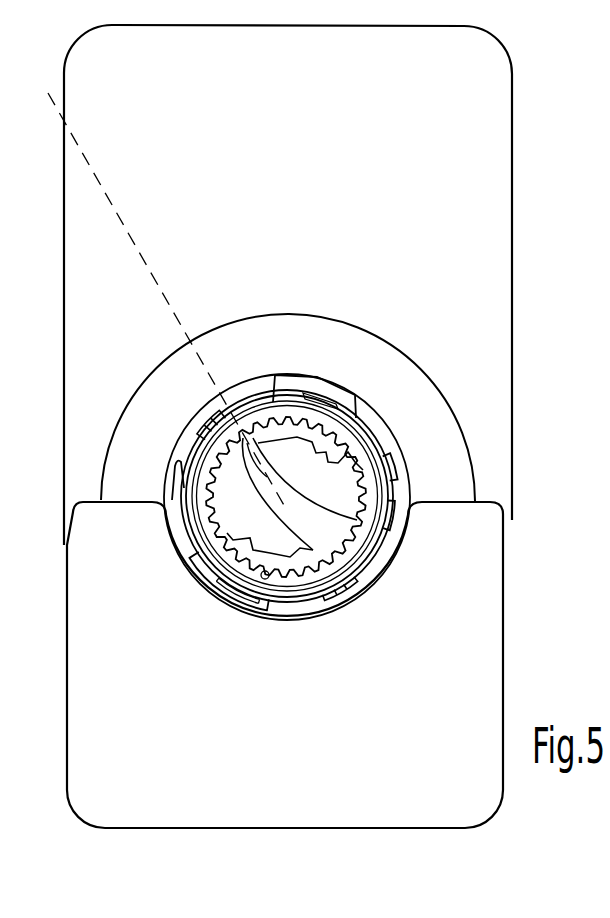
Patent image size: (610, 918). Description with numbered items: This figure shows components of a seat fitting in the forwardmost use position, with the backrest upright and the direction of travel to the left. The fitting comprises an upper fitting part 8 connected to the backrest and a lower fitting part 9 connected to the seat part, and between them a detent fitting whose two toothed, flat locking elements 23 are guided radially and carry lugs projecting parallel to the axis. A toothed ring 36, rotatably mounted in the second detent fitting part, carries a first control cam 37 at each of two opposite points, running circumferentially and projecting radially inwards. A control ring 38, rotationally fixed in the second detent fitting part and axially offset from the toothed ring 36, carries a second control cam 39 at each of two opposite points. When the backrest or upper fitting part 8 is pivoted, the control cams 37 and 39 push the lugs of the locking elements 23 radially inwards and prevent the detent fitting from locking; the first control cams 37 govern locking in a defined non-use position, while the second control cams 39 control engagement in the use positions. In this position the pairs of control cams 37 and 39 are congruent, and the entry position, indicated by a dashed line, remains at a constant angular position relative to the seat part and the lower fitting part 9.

The upper fitting part 8 is at (466, 135).
The lower fitting part 9 is at (468, 668).
The locking element 23 is at (345, 397).
The toothed ring 36 is at (363, 463).
The first control cam 37 is at (345, 560).
The control ring 38 is at (390, 485).
The second control cam 39 is at (365, 522).